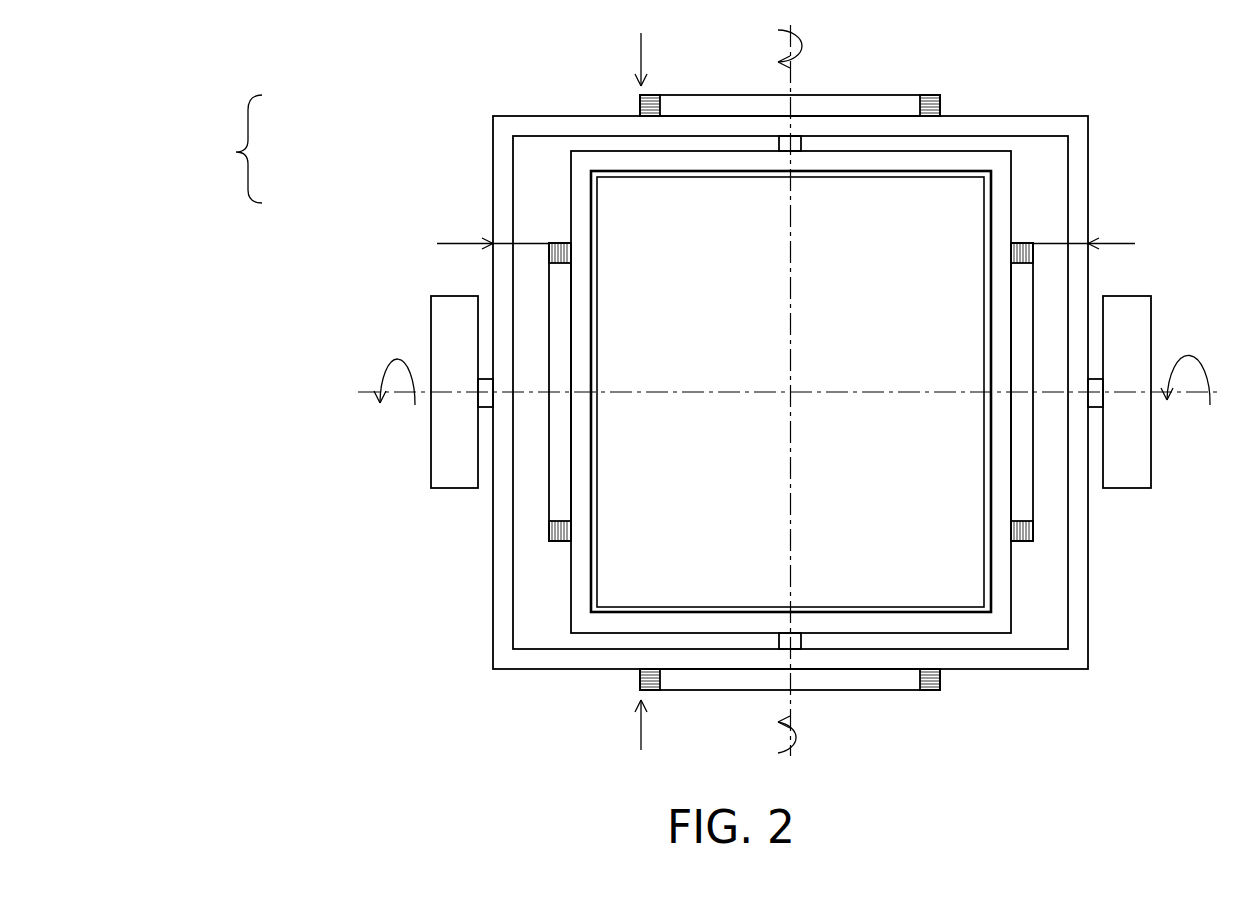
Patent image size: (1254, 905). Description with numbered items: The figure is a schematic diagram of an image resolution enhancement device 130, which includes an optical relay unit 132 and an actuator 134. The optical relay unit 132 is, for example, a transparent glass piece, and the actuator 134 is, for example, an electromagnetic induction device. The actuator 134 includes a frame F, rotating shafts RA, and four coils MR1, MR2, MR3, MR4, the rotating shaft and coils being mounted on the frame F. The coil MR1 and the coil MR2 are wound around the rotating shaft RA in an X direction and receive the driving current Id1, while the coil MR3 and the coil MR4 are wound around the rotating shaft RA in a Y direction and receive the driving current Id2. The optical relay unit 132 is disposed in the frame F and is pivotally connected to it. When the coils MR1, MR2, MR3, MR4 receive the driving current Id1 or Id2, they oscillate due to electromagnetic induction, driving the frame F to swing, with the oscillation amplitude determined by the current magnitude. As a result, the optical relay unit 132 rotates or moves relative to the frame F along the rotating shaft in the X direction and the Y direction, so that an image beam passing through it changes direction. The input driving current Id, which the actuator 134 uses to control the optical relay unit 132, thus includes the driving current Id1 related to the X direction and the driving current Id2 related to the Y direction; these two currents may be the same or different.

The image resolution enhancement device 130 is at (1139, 124).
The optical relay unit 132 is at (950, 205).
The actuator 134 is at (492, 169).
The frame F is at (1089, 179).
The rotating shaft RA is at (801, 143).
The coil MR1 is at (549, 530).
The coil MR2 is at (1033, 530).
The coil MR3 is at (930, 690).
The coil MR4 is at (652, 100).
The X direction X is at (781, 392).
The Y direction Y is at (790, 405).
The driving current Id is at (236, 152).
The driving current Id1 is at (790, 232).
The driving current Id2 is at (626, 391).